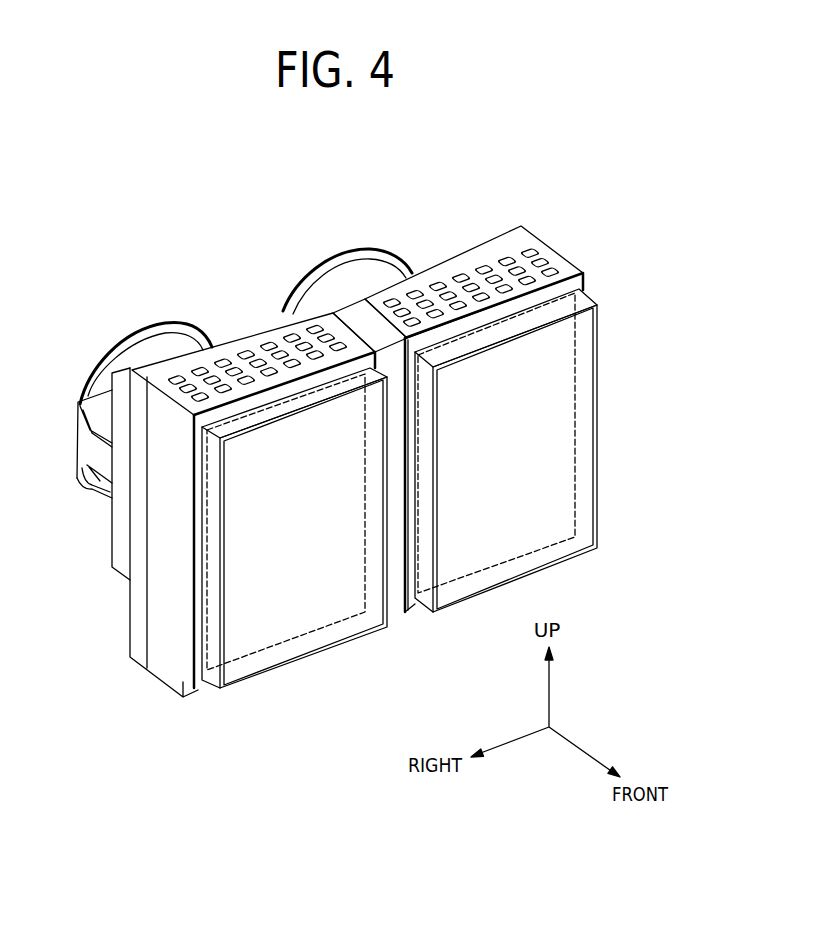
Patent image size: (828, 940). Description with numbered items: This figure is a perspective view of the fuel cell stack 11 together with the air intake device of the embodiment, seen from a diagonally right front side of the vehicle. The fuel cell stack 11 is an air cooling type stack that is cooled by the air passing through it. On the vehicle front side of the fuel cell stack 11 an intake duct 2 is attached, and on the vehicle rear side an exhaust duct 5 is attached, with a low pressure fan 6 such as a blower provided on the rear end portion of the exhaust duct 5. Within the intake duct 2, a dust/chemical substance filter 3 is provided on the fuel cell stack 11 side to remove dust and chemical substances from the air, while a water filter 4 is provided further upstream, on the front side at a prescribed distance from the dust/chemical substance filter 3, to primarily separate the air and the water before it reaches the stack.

The intake duct 2 is at (595, 297).
The dust/chemical substance filter 3 is at (575, 440).
The water filter 4 is at (583, 390).
The exhaust duct 5 is at (120, 400).
The low pressure fan 6 is at (137, 333).
The fuel cell stack 11 is at (558, 250).